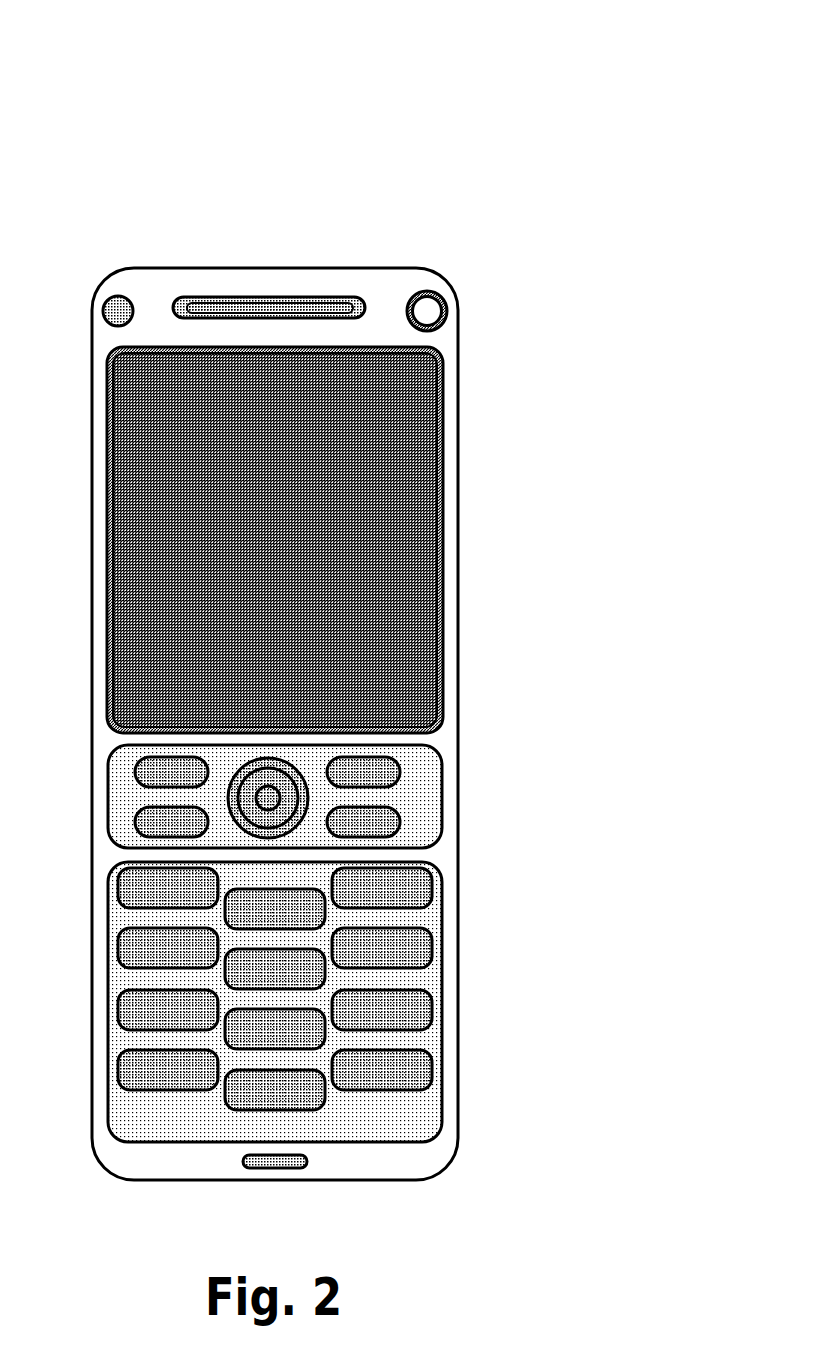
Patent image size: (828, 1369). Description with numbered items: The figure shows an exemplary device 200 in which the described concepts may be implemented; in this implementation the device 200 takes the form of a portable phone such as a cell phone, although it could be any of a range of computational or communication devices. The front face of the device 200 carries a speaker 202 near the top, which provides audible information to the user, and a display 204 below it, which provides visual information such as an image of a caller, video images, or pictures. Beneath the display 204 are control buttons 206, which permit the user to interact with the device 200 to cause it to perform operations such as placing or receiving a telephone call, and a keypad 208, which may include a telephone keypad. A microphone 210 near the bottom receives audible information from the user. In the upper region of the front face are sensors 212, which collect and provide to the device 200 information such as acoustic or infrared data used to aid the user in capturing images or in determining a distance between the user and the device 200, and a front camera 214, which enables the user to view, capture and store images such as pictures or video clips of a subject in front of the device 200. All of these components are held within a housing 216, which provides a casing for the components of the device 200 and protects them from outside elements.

The device 200 is at (260, 138).
The speaker 202 is at (268, 297).
The display 204 is at (393, 347).
The control buttons 206 is at (442, 797).
The keypad 208 is at (442, 1001).
The microphone 210 is at (307, 1161).
The sensors 212 is at (445, 310).
The front camera 214 is at (118, 296).
The housing 216 is at (459, 1061).